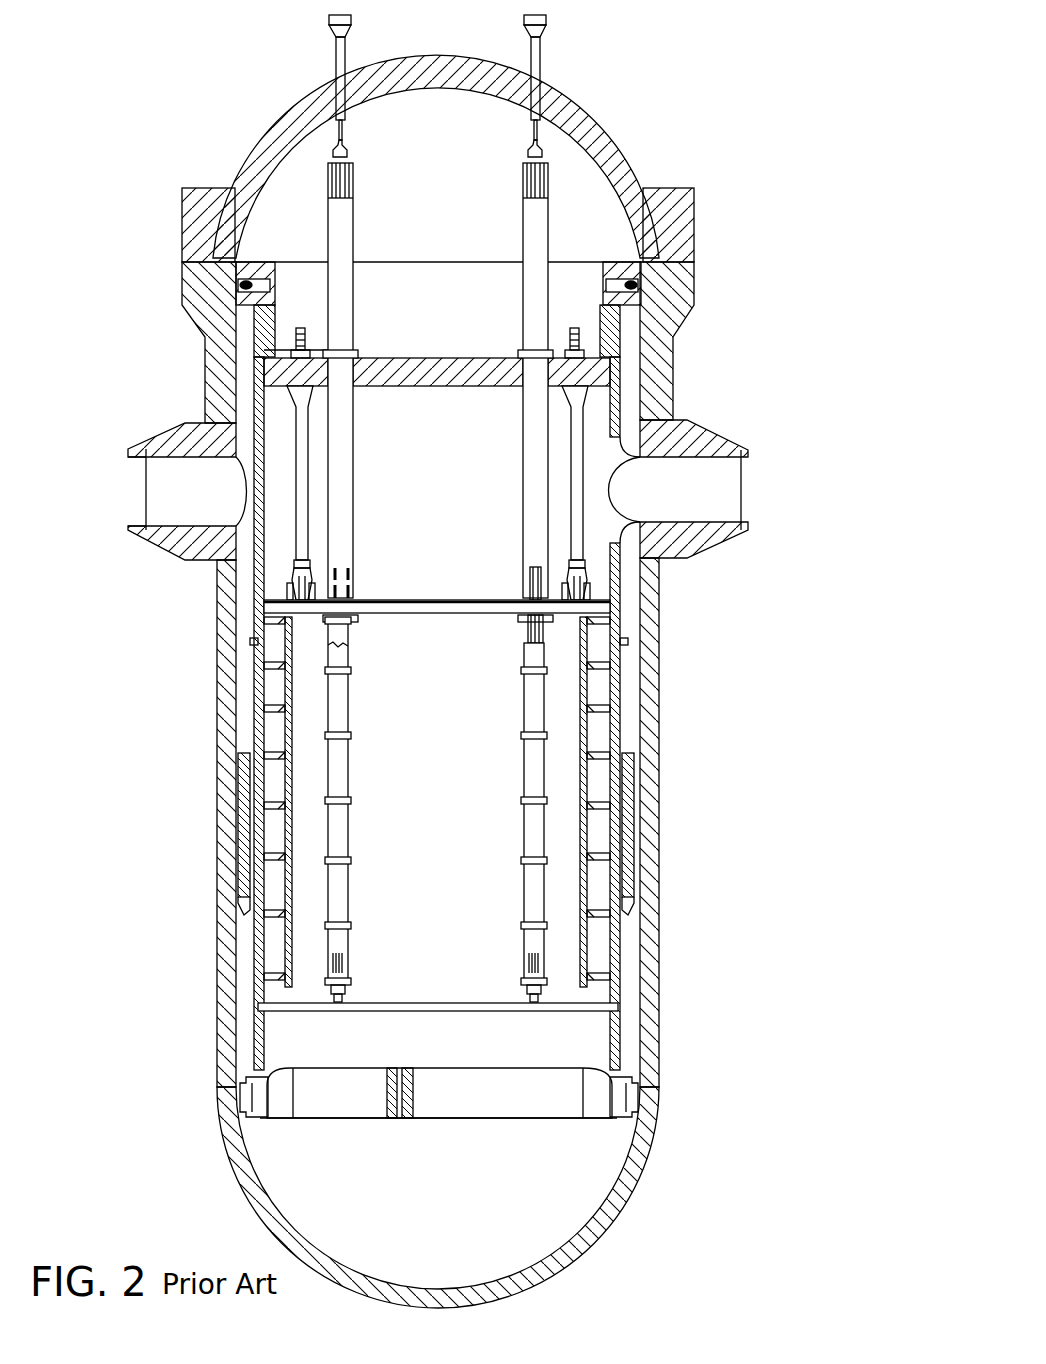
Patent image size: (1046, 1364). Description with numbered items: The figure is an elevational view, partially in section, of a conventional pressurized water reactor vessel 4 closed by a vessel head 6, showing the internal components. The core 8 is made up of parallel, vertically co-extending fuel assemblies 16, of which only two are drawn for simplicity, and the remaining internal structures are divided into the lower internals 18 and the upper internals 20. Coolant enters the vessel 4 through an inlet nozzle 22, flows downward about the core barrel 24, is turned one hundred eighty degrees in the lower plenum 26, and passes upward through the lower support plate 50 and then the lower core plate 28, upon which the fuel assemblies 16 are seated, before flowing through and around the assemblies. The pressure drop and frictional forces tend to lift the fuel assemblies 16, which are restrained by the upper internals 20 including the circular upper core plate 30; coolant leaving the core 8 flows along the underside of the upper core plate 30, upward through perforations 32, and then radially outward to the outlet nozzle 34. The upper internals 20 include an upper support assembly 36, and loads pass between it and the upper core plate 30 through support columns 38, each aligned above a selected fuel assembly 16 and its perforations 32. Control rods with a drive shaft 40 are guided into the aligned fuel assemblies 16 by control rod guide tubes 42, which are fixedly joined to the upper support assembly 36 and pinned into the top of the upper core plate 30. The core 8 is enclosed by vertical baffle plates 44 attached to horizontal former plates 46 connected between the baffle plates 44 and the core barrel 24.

The reactor vessel 4 is at (662, 670).
The vessel head 6 is at (615, 120).
The core 8 is at (442, 800).
The fuel assembly 16 is at (349, 706).
The lower internals 18 is at (458, 1051).
The upper internals 20 is at (458, 465).
The inlet nozzle 22 is at (175, 437).
The core barrel 24 is at (254, 600).
The lower plenum 26 is at (605, 1172).
The lower core plate 28 is at (478, 1003).
The upper core plate 30 is at (472, 607).
The perforations 32 is at (393, 600).
The outlet nozzle 34 is at (714, 438).
The upper support assembly 36 is at (610, 262).
The support column 38 is at (570, 440).
The drive shaft 40 is at (530, 568).
The control rod guide tube 42 is at (353, 432).
The baffle plate 44 is at (592, 823).
The former plate 46 is at (590, 855).
The lower support plate 50 is at (593, 1077).